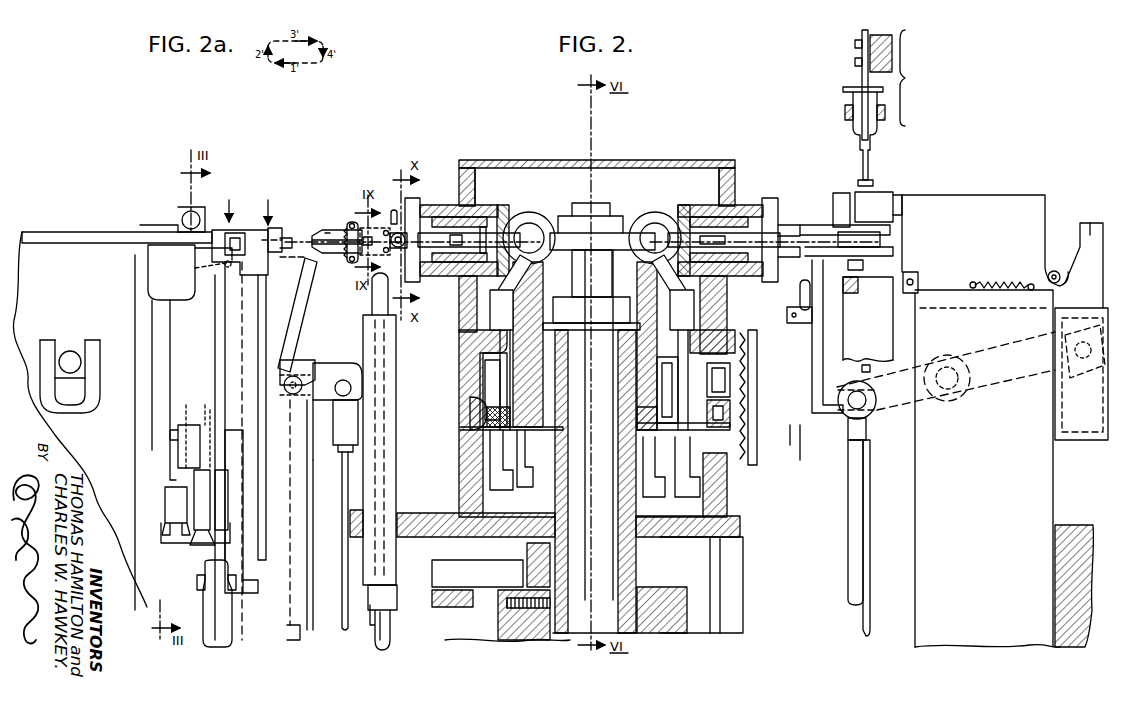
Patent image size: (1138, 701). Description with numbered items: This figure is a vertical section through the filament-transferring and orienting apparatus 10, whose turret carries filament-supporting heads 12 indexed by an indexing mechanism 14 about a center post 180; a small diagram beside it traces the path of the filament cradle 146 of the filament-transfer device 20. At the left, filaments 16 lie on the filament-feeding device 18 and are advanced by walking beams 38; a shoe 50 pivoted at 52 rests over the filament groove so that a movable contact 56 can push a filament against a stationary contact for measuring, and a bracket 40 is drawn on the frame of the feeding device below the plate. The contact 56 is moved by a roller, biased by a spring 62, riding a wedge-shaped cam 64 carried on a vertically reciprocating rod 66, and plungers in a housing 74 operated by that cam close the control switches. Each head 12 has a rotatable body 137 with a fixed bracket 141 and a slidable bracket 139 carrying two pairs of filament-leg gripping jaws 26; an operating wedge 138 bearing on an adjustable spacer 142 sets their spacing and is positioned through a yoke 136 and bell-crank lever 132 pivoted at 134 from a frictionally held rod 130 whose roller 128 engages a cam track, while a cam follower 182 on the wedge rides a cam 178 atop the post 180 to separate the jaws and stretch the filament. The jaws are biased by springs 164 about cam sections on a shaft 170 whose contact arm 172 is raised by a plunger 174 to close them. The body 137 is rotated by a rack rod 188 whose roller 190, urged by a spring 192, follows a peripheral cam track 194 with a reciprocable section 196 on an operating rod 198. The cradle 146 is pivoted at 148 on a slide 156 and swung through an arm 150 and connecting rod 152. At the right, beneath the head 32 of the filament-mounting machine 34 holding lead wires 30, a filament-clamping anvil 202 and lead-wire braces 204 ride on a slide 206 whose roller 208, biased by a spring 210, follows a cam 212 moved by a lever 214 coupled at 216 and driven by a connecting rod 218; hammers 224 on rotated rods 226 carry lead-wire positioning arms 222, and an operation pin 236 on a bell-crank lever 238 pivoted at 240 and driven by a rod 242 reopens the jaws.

The filament-transferring and orienting apparatus 10 is at (640, 160).
The filament-supporting head 12 is at (447, 206).
The indexing mechanism 14 is at (432, 575).
The filament 16 is at (326, 230).
The filament-feeding device 18 is at (77, 232).
The filament-transfer device 20 is at (322, 335).
The filament-leg gripping jaws 26 is at (334, 230).
The lead wire 30 is at (870, 154).
The head of the filament-mounting machine 32 is at (885, 36).
The filament-mounting machine 34 is at (1078, 525).
The walking beams 38 is at (290, 232).
The clevis bracket 40 is at (87, 428).
The shoe 50 is at (203, 224).
The pivot of the shoe 52 is at (183, 212).
The movable contact 56 is at (235, 238).
The spring 62 is at (216, 267).
The wedge-shaped cam 64 is at (222, 248).
The rod 66 is at (226, 627).
The housing 74 is at (176, 456).
The roller 128 is at (512, 488).
The rod 130 is at (500, 380).
The bell-crank lever 132 is at (512, 280).
The pivot of the bell-crank lever 134 is at (540, 305).
The yoke 136 is at (696, 210).
The rotatable body 137 is at (480, 207).
The operating wedge 138 is at (509, 218).
The slidable bracket 139 is at (428, 263).
The fixed bracket 141 is at (785, 262).
The adjustable spacer 142 is at (408, 220).
The filament cradle 146 is at (302, 296).
The pivot of the filament cradle 148 is at (280, 376).
The arm 150 is at (325, 375).
The connecting rod 152 is at (340, 500).
The slide 156 is at (300, 432).
The springs 164 is at (349, 222).
The shaft 170 is at (362, 262).
The contact arm 172 is at (382, 222).
The plunger 174 is at (372, 306).
The cam 178 is at (600, 233).
The center post 180 is at (598, 217).
The cam follower 182 is at (550, 216).
The rod 188 is at (480, 369).
The roller 190 is at (472, 413).
The spring 192 is at (748, 397).
The cam track 194 is at (460, 447).
The vertically reciprocable section 196 is at (732, 413).
The slidable operating rod 198 is at (720, 565).
The filament-clamping anvil 202 is at (872, 205).
The lead-wire braces 204 is at (903, 196).
The slide 206 is at (1010, 198).
The roller 208 is at (1060, 258).
The spring 210 is at (1002, 280).
The cam 212 is at (1092, 222).
The lever 214 is at (898, 410).
The coupling of lever to cam 216 is at (1058, 360).
The connecting rod 218 is at (849, 556).
The lead-wire positioning arm 222 is at (838, 193).
The hammer 224 is at (838, 188).
The rod 226 is at (866, 364).
The operation pin 236 is at (790, 307).
The bell-crank lever 238 is at (812, 370).
The pivot of the bell-crank lever 240 is at (808, 432).
The rod 242 is at (866, 583).